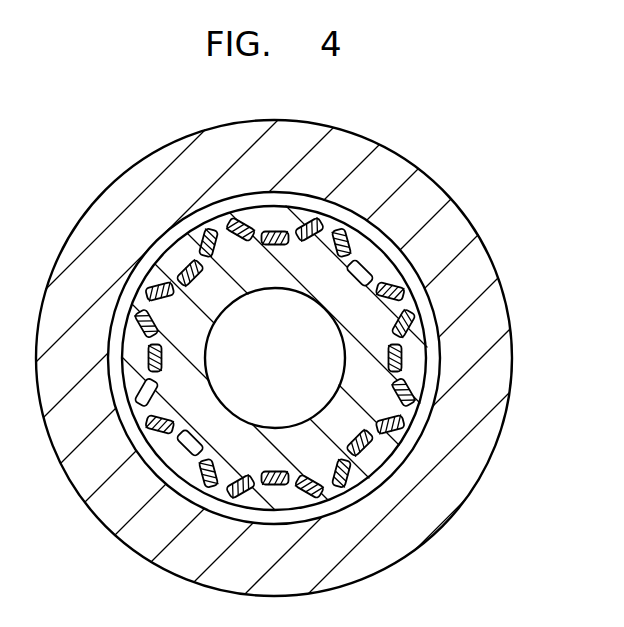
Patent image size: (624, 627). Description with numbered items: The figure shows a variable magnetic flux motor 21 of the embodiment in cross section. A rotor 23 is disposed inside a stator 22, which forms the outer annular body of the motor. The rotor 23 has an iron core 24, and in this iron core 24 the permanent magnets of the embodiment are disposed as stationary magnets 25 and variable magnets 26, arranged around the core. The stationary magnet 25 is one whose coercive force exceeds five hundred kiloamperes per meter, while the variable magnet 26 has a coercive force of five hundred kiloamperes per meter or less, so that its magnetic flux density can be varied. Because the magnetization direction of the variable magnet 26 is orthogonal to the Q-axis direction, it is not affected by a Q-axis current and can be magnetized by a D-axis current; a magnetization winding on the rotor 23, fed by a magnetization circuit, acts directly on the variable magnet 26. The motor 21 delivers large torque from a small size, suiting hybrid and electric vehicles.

The variable magnetic flux motor 21 is at (452, 143).
The stator 22 is at (498, 438).
The rotor 23 is at (496, 164).
The iron core 24 is at (387, 275).
The stationary magnet 25 is at (406, 333).
The variable magnet 26 is at (402, 365).